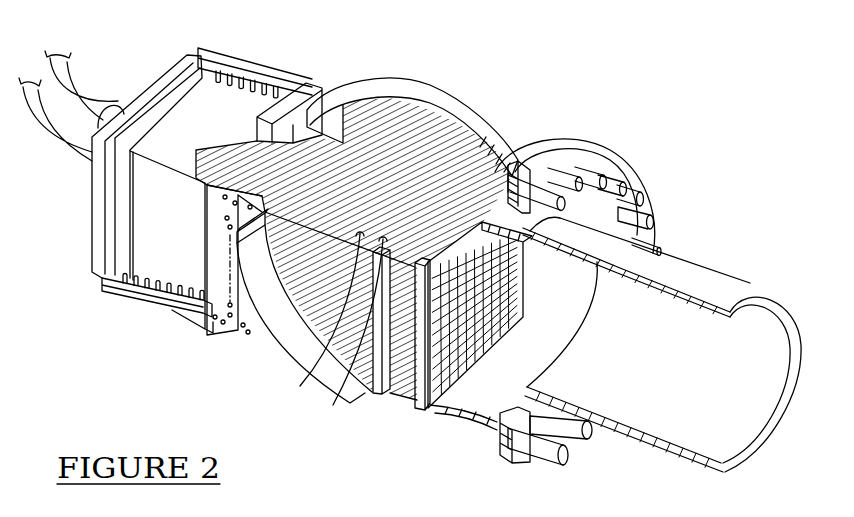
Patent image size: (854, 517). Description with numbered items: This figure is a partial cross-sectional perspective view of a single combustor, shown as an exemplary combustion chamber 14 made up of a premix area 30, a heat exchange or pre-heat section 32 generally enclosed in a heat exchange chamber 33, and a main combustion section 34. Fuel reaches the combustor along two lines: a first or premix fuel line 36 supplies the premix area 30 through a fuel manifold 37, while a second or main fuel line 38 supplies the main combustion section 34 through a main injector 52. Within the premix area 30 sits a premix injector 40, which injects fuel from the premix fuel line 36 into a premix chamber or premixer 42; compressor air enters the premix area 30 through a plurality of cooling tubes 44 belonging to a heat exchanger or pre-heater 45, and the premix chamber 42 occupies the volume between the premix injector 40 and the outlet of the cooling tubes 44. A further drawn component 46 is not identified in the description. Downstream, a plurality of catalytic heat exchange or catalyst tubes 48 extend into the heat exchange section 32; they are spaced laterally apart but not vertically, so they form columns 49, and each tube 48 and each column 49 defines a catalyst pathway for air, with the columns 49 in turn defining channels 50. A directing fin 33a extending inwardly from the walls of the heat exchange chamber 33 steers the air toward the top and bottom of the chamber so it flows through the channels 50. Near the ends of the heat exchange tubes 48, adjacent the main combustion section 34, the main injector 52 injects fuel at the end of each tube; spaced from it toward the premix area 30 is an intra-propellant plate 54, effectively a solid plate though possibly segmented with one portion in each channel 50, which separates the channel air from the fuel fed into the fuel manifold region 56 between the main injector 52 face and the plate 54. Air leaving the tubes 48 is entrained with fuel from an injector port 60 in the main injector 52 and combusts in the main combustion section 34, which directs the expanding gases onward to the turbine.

The combustion chamber 14 is at (613, 129).
The premix area 30 is at (265, 60).
The heat exchange section 32 is at (433, 63).
The heat exchange chamber 33 is at (372, 128).
The directing fin 33a is at (272, 340).
The main combustion section 34 is at (628, 358).
The premix fuel line 36 is at (67, 76).
The fuel manifold 37 is at (183, 58).
The main fuel line 38 is at (27, 125).
The premix injector 40 is at (176, 253).
The premix chamber 42 is at (157, 310).
The cooling tubes 44 is at (232, 346).
The pre-heater 45 is at (267, 368).
The pins 46 is at (192, 300).
The catalytic heat exchange tubes 48 is at (312, 372).
The columns 49 is at (350, 217).
The channels 50 is at (323, 214).
The main injector 52 is at (423, 378).
The intra-propellant plate 54 is at (377, 370).
The fuel manifold region 56 is at (477, 200).
The injector port 60 is at (434, 405).